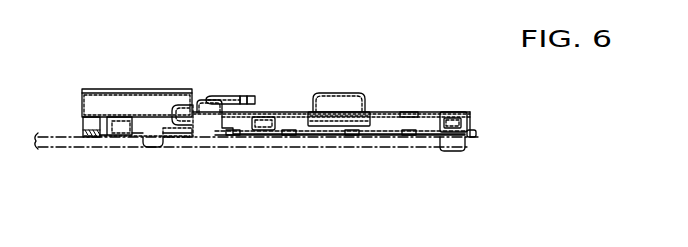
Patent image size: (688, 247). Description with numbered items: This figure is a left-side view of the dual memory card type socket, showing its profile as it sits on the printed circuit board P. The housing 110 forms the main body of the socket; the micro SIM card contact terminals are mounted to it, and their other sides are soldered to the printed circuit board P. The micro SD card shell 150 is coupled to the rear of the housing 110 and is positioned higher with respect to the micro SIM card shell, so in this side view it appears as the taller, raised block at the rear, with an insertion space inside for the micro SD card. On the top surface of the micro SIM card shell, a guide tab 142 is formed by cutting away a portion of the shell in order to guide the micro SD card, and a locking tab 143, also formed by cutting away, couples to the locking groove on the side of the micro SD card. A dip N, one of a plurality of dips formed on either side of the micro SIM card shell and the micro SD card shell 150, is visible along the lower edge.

The micro SD card shell 150 is at (129, 85).
The locking tab 143 is at (235, 97).
The guide tab 142 is at (338, 94).
The housing 110 is at (385, 127).
The dips N is at (155, 150).
The printed circuit board P is at (243, 148).